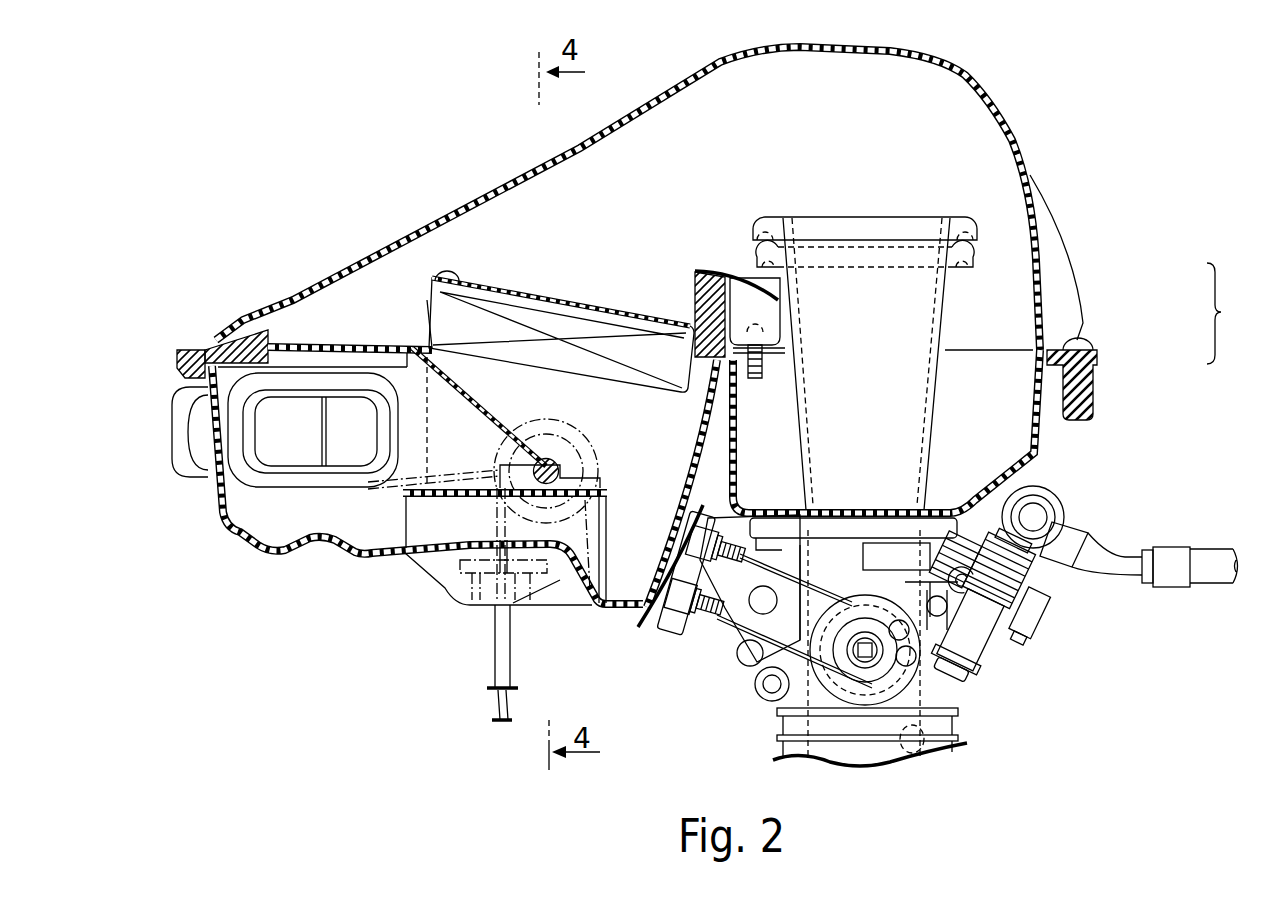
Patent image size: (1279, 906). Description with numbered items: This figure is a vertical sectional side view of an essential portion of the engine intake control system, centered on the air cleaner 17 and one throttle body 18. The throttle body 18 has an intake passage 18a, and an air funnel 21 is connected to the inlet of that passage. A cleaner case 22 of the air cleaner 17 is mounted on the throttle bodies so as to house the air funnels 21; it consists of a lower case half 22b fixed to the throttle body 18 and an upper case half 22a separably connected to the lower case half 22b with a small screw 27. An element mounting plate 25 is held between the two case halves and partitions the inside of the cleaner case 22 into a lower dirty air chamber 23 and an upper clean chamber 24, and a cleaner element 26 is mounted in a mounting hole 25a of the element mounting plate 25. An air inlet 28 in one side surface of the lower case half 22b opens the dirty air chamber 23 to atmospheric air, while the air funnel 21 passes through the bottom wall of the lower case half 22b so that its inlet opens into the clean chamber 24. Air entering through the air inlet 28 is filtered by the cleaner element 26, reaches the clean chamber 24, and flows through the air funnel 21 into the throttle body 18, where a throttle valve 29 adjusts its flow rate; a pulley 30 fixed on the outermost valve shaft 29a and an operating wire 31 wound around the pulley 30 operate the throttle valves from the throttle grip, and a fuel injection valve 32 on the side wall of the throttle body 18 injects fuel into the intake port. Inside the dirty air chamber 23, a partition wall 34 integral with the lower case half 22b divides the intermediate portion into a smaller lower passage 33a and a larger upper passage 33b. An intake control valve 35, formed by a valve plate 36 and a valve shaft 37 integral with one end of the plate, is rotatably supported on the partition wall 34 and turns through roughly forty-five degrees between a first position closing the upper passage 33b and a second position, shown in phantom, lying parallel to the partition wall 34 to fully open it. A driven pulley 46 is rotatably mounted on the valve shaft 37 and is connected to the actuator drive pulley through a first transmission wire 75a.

The air cleaner 17 is at (990, 84).
The throttle body 18 is at (967, 693).
The intake passage 18a is at (940, 753).
The air funnel 21 is at (818, 262).
The cleaner case 22 is at (1232, 313).
The upper case half 22a is at (1042, 297).
The lower case half 22b is at (1080, 388).
The dirty air chamber 23 is at (652, 456).
The clean chamber 24 is at (627, 229).
The element mounting plate 25 is at (318, 347).
The mounting hole 25a is at (440, 320).
The cleaner element 26 is at (560, 320).
The small screw 27 is at (1077, 340).
The air inlet 28 is at (283, 440).
The throttle valve 29 is at (760, 693).
The valve shaft 29a is at (862, 657).
The pulley 30 is at (867, 598).
The operating wire 31 is at (750, 645).
The fuel injection valve 32 is at (977, 633).
The lower passage 33a is at (447, 530).
The upper passage 33b is at (443, 450).
The partition wall 34 is at (420, 497).
The intake control valve 35 is at (472, 385).
The valve plate 36 is at (440, 383).
The valve shaft 37 is at (552, 455).
The driven pulley 46 is at (582, 600).
The first transmission wire 75a is at (500, 707).